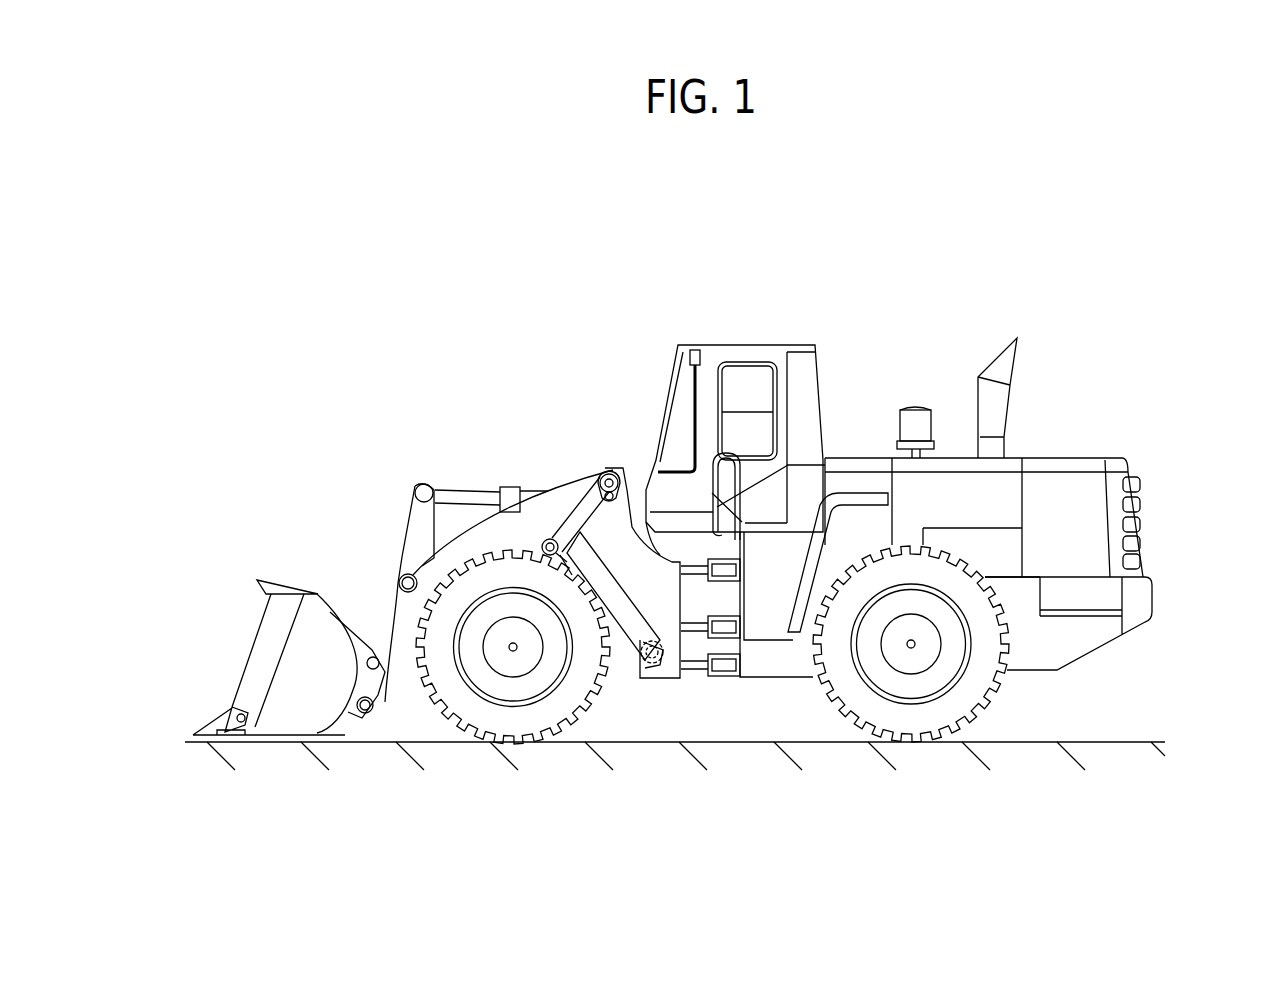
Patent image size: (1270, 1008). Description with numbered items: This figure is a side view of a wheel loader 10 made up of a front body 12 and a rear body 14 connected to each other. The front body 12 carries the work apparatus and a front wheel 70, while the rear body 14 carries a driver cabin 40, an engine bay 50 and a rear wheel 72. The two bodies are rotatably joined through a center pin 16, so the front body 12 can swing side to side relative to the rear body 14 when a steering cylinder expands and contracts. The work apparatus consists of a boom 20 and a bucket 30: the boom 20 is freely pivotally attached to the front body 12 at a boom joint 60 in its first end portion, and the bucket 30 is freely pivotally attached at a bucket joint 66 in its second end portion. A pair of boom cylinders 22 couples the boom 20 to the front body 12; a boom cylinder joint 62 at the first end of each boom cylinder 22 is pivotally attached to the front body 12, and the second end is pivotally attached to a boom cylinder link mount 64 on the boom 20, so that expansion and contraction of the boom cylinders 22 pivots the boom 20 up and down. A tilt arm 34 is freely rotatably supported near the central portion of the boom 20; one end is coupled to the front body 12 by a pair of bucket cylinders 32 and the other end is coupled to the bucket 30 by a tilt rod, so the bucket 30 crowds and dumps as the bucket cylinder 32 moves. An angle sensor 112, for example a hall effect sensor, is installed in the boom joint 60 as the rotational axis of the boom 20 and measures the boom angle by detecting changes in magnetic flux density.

The wheel loader 10 is at (718, 218).
The front body 12 is at (668, 672).
The rear body 14 is at (1137, 598).
The center pin 16 is at (720, 680).
The boom 20 is at (393, 695).
The boom cylinder 22 is at (632, 637).
The bucket 30 is at (265, 652).
The bucket cylinder 32 is at (512, 486).
The tilt arm 34 is at (415, 522).
The driver cabin 40 is at (800, 370).
The engine bay 50 is at (1070, 488).
The boom joint 60 is at (594, 478).
The boom cylinder joint 62 is at (657, 662).
The boom cylinder link mount 64 is at (529, 542).
The bucket joint 66 is at (368, 712).
The front wheel 70 is at (500, 715).
The rear wheel 72 is at (902, 718).
The angle sensor 112 is at (608, 470).